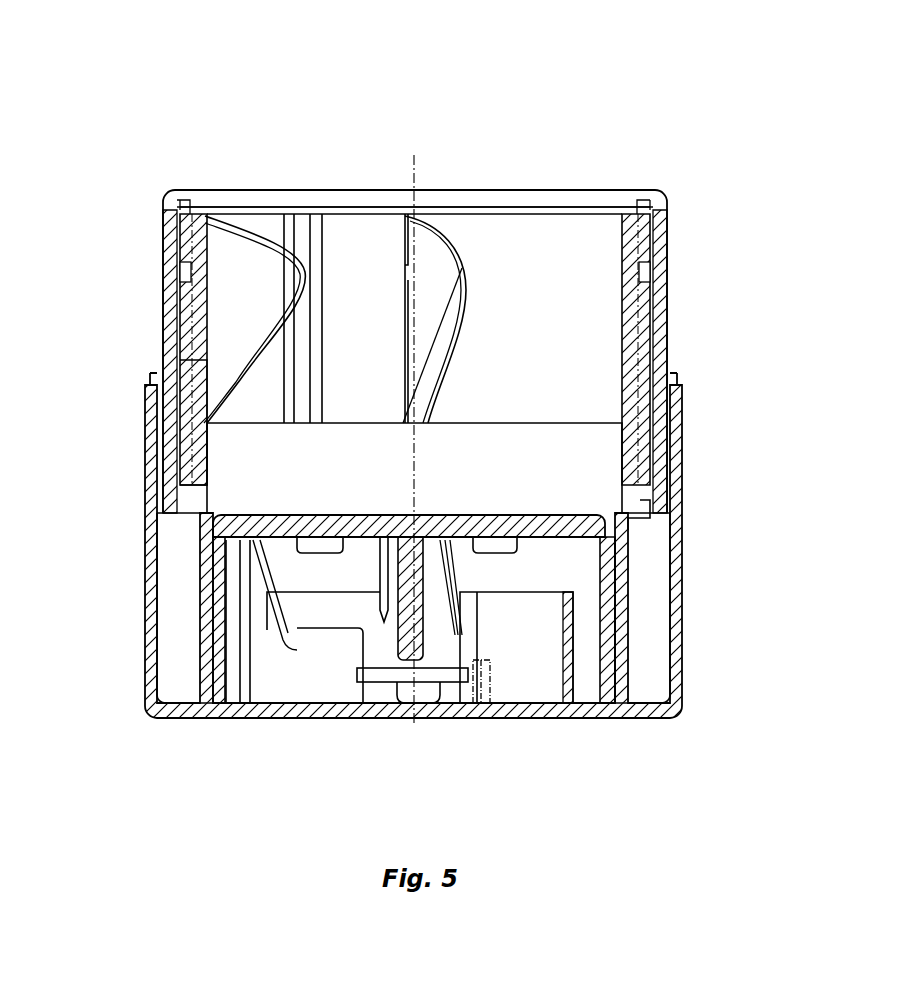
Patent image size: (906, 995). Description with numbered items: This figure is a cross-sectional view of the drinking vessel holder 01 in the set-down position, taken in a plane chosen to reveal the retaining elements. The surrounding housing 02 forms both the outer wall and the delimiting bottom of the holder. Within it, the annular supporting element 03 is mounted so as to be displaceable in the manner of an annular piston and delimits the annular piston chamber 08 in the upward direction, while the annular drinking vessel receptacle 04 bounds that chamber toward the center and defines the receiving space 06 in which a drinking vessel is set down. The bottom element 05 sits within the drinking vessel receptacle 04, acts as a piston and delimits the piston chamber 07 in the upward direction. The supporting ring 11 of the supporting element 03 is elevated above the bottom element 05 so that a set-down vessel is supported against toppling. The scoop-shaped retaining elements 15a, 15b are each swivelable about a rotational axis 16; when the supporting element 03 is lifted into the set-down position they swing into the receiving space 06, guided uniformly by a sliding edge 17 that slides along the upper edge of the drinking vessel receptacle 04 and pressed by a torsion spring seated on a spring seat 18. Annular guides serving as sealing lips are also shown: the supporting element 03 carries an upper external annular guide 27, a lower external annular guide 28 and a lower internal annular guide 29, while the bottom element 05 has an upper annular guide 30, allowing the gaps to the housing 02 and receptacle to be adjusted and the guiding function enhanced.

The drinking vessel holder 01 is at (150, 58).
The housing 02 is at (255, 722).
The supporting element 03 is at (668, 330).
The drinking vessel receptacle 04 is at (205, 630).
The bottom element 05 is at (583, 527).
The receiving space 06 is at (414, 468).
The piston chamber 07 is at (399, 620).
The annular piston chamber 08 is at (178, 608).
The supporting ring 11 is at (332, 206).
The retaining element 15a is at (443, 277).
The retaining element 15b is at (232, 280).
The rotational axis 16 is at (192, 178).
The sliding edge 17 is at (238, 346).
The spring seat 18 is at (186, 262).
The upper external annular guide 27 is at (670, 420).
The lower external annular guide 28 is at (660, 520).
The lower internal annular guide 29 is at (650, 570).
The upper annular guide 30 is at (620, 620).